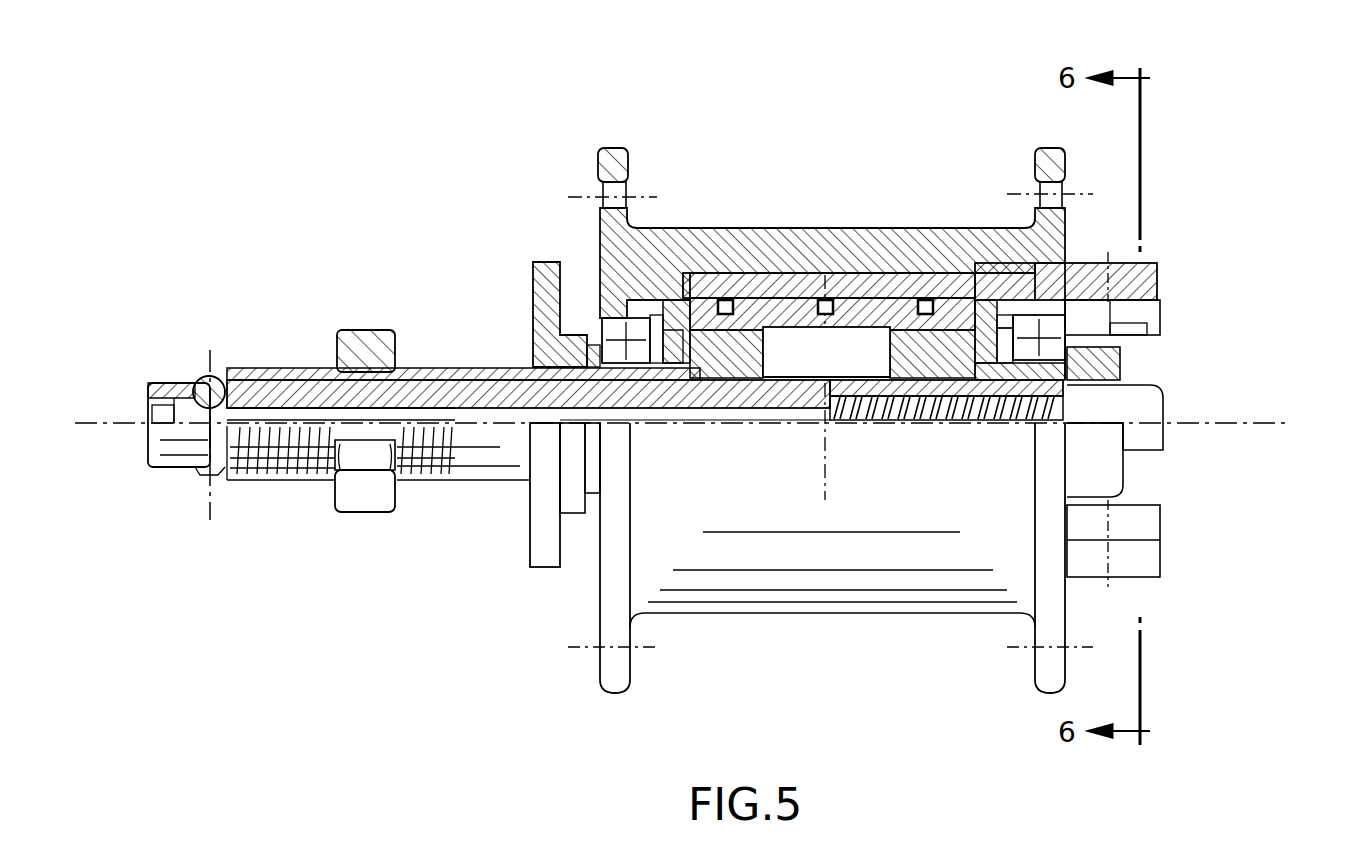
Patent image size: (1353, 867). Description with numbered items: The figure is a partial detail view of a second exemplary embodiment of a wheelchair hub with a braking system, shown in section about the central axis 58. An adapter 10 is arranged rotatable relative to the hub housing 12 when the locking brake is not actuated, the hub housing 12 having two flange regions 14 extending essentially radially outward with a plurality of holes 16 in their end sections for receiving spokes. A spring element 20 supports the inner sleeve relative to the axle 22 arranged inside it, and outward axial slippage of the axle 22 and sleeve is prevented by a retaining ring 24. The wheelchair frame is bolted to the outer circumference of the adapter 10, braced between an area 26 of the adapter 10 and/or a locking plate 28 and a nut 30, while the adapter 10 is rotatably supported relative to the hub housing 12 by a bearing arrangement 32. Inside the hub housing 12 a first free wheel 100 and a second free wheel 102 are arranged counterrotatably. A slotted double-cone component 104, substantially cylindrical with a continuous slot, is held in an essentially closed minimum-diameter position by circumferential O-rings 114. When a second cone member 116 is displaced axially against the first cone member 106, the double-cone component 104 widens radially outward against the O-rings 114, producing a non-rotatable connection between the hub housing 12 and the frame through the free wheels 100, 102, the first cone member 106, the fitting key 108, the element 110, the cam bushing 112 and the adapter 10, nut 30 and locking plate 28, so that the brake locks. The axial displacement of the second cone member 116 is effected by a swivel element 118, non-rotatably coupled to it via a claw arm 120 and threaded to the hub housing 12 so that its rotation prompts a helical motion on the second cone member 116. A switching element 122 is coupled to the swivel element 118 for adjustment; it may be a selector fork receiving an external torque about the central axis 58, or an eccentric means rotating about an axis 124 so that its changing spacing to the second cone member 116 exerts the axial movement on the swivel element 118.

The adapter 10 is at (458, 363).
The hub housing 12 is at (612, 230).
The flange regions 14 is at (618, 162).
The holes 16 is at (620, 192).
The spring element 20 is at (875, 415).
The axle 22 is at (683, 412).
The retaining ring 24 is at (148, 403).
The area 26 is at (532, 357).
The locking plate 28 is at (550, 265).
The nut 30 is at (362, 340).
The bearing arrangement 32 is at (610, 332).
The central axis 58 is at (1268, 418).
The first free wheel 100 is at (767, 287).
The second free wheel 102 is at (876, 290).
The slotted double-cone component 104 is at (800, 323).
The first cone member 106 is at (703, 332).
The fitting key 108 is at (877, 368).
The element 110 is at (733, 365).
The cam bushing 112 is at (537, 343).
The O-rings 114 is at (720, 302).
The second cone member 116 is at (980, 350).
The swivel element 118 is at (1155, 263).
The claw arm 120 is at (1010, 328).
The switching element 122 is at (1147, 320).
The axis 124 is at (1147, 345).